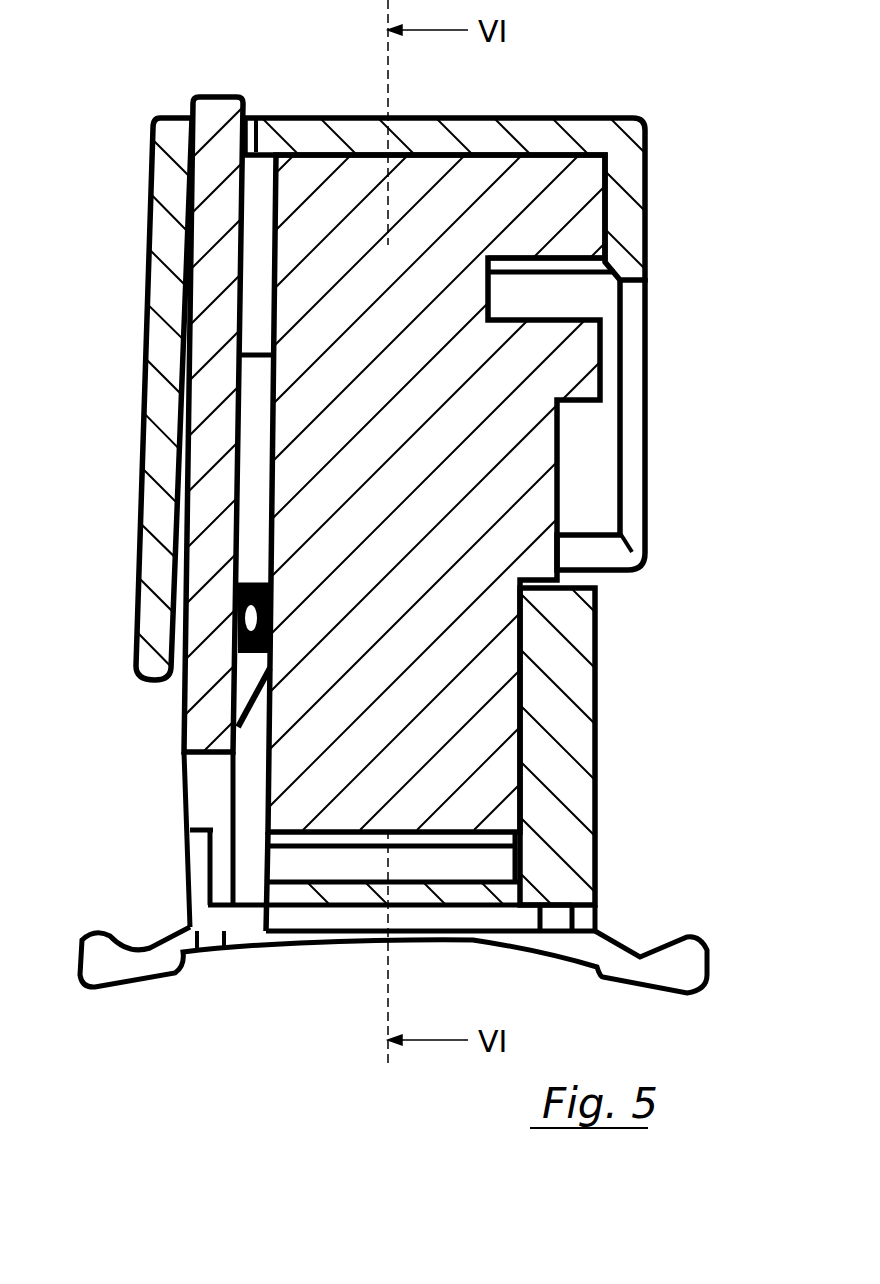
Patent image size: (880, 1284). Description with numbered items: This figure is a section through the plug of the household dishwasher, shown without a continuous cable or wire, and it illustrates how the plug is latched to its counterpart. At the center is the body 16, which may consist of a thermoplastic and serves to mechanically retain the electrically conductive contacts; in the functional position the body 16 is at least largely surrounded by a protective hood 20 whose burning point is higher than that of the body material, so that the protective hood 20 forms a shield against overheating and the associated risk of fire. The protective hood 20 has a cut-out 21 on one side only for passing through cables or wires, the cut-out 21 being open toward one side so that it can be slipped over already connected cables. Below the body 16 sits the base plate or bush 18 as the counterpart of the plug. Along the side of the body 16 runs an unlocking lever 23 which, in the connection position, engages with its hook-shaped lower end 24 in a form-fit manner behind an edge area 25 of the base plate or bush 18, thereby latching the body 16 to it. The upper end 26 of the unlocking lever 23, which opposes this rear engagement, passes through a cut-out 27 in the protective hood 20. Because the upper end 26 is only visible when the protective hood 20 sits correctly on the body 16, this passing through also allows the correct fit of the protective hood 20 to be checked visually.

The body 16 is at (538, 493).
The base plate or bush 18 is at (577, 673).
The protective hood 20 is at (527, 135).
The cut-out 21 is at (652, 337).
The unlocking lever 23 is at (218, 205).
The hook-shaped lower end 24 is at (236, 705).
The edge area 25 is at (240, 660).
The upper end 26 is at (213, 105).
The cut-out 27 is at (258, 116).